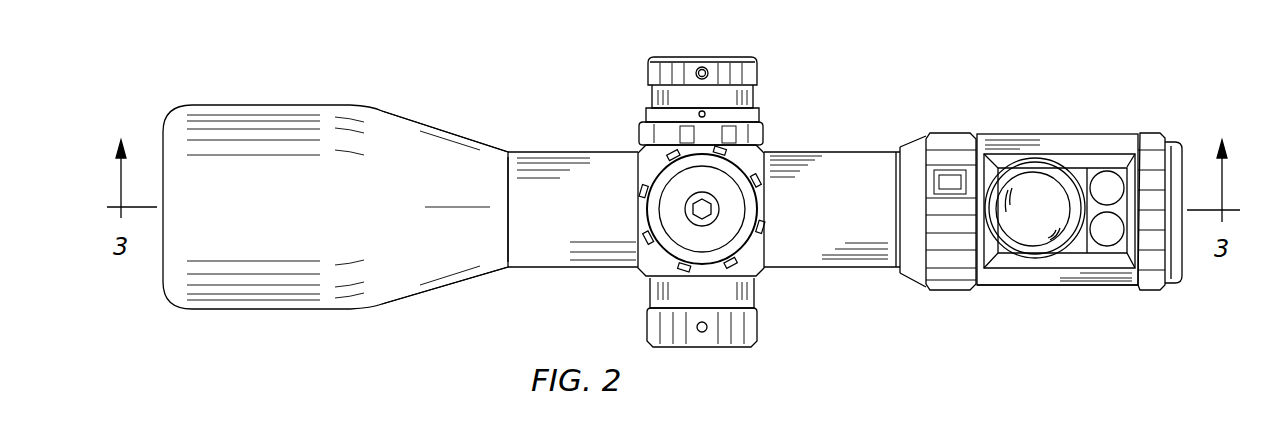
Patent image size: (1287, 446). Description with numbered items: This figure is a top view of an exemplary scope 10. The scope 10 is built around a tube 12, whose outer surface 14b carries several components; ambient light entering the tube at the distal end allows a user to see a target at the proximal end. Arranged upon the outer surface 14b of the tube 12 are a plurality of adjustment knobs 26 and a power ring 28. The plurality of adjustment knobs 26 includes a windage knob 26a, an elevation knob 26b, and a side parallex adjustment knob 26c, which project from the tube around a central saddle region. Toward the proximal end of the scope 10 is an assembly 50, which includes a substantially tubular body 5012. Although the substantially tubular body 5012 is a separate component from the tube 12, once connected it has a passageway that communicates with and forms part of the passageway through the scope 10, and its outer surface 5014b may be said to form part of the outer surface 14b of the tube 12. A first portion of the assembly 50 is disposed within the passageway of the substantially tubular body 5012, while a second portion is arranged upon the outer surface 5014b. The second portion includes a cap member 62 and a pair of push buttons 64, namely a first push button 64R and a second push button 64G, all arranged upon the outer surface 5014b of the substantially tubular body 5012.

The scope 10 is at (146, 78).
The tube 12 is at (278, 64).
The outer surface 14b is at (382, 108).
The adjustment knobs 26 is at (569, 321).
The windage knob 26a is at (642, 50).
The elevation knob 26b is at (646, 155).
The side parallex adjustment knob 26c is at (630, 337).
The power ring 28 is at (940, 108).
The assembly 50 is at (1092, 82).
The cap member 62 is at (1040, 158).
The pair of push buttons 64 is at (1236, 72).
The first push button 64R is at (1108, 178).
The second push button 64G is at (1120, 225).
The outer surface 5014b is at (1013, 286).
The substantially tubular body 5012 is at (1074, 302).